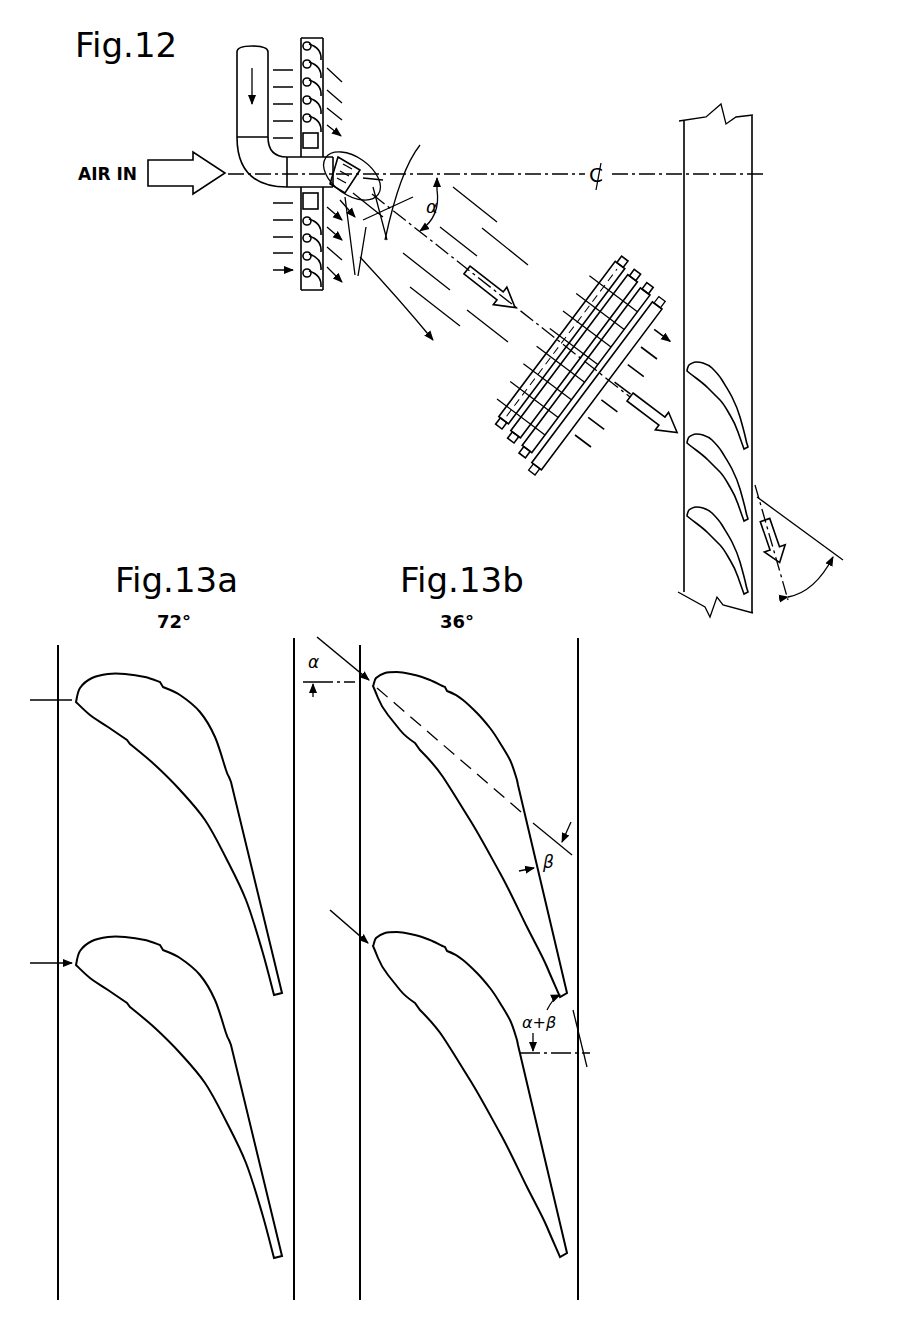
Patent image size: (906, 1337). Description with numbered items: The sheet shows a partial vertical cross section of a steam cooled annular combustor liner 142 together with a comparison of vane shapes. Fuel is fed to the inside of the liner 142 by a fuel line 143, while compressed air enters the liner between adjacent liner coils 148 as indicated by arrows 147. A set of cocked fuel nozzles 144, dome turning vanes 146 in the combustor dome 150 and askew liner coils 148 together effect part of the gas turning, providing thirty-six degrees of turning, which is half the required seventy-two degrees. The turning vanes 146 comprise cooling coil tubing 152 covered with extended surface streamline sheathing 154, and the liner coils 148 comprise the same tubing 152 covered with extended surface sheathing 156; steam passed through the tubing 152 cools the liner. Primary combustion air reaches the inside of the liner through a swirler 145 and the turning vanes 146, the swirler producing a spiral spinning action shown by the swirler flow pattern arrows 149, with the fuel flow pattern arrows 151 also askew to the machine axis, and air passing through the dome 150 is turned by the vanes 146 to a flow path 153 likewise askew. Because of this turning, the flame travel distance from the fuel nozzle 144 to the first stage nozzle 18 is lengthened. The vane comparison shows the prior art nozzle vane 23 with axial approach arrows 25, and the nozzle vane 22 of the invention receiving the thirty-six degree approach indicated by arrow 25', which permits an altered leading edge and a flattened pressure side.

In FIG. 12, the fuel line 143 is at (239, 79).
In FIG. 12, the flow path 153 is at (334, 76).
In FIG. 12, the swirler 145 is at (329, 140).
In FIG. 12, the fuel nozzle 144 is at (340, 156).
In FIG. 12, the swirler flow pattern arrows 149 is at (372, 155).
In FIG. 12, the extended surface streamline sheathing 154 is at (300, 229).
In FIG. 12, the cooling coil tubing 152 is at (300, 258).
In FIG. 12, the combustor dome 150 is at (298, 278).
In FIG. 12, the fuel flow pattern arrows 151 is at (356, 276).
In FIG. 12, the dome turning vanes 146 is at (312, 291).
In FIG. 12, the combustor liner 142 is at (425, 376).
In FIG. 12, the compressed air arrows 147 is at (512, 393).
In FIG. 12, the extended surface sheathing 156 is at (510, 435).
In FIG. 12, the combustor liner coils 148 is at (574, 453).
In FIG. 12, the approach arrow 25' is at (653, 429).
In FIG. 13B, the approach arrow 25' is at (335, 938).
In FIG. 12, the first stage nozzle 18 is at (764, 473).
In FIG. 12, the nozzle vane 22 is at (737, 407).
In FIG. 13B, the nozzle vane 22 is at (500, 724).
In FIG. 13A, the prior art nozzle vane 23 is at (208, 720).
In FIG. 13A, the axial approach arrows 25 is at (40, 852).